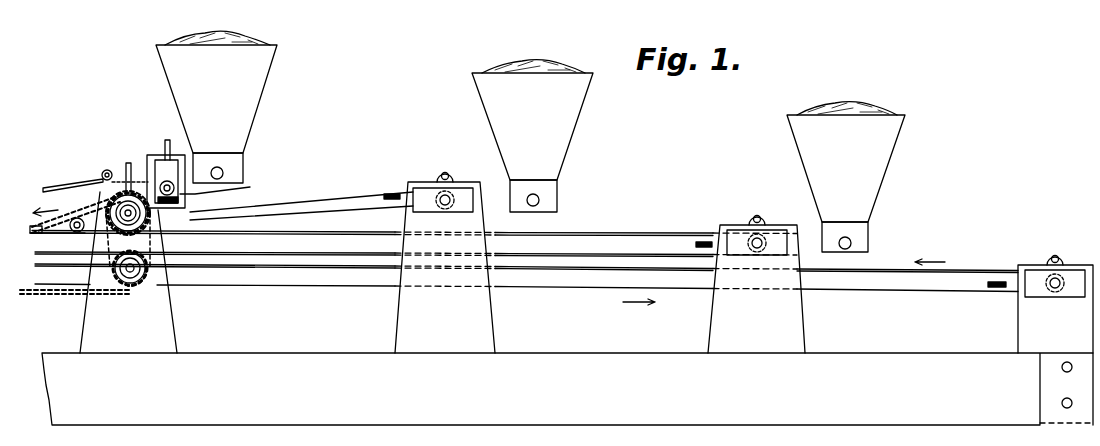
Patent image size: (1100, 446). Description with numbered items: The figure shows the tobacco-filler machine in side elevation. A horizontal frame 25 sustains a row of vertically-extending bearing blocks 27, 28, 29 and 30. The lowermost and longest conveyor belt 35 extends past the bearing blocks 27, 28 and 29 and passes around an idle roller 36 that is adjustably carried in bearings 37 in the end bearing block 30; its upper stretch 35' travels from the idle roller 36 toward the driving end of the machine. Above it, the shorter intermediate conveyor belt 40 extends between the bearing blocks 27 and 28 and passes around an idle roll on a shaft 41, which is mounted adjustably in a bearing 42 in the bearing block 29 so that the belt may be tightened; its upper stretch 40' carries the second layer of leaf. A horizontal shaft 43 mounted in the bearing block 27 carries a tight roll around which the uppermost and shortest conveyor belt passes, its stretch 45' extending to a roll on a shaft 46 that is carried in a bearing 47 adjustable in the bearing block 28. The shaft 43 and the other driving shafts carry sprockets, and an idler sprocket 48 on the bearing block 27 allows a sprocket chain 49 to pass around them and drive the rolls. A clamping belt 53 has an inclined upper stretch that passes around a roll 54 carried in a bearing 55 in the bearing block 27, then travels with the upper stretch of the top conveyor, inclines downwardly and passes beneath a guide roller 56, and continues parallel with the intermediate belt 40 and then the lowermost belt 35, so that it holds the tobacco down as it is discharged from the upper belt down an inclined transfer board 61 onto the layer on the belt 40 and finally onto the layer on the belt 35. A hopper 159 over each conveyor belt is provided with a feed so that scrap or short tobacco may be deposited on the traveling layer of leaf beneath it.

The horizontal frame 25 is at (567, 389).
The bearing block 27 is at (128, 272).
The bearing block 28 is at (445, 267).
The bearing block 29 is at (756, 289).
The bearing block 30 is at (1055, 309).
The conveyor belt 35 is at (526, 291).
The conveyor belt stretch 35' is at (568, 281).
The idle roller 36 is at (1062, 277).
The bearings 37 is at (1045, 278).
The conveyor belt 40 is at (629, 244).
The conveyor belt stretch 40' is at (416, 244).
The shaft 41 is at (762, 237).
The bearing 42 is at (748, 238).
The horizontal shaft 43 is at (188, 211).
The conveyor belt stretch 45' is at (301, 206).
The shaft 46 is at (452, 194).
The bearing 47 is at (433, 190).
The idler sprocket 48 is at (134, 282).
The sprocket chain 49 is at (86, 200).
The clamping belt 53 is at (53, 187).
The roll 54 is at (172, 184).
The bearing 55 is at (229, 185).
The guide roller 56 is at (72, 230).
The inclined transfer board 61 is at (105, 170).
The hopper 159 is at (530, 141).